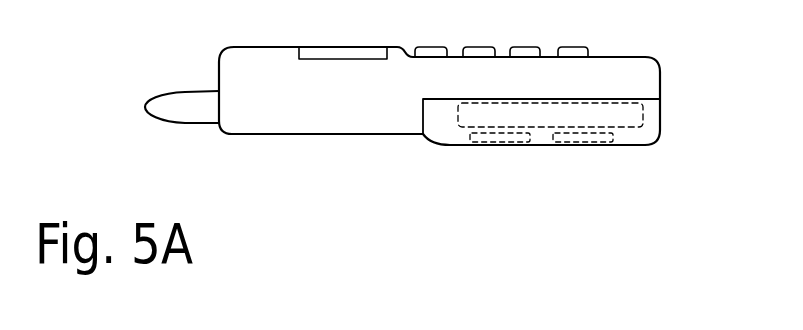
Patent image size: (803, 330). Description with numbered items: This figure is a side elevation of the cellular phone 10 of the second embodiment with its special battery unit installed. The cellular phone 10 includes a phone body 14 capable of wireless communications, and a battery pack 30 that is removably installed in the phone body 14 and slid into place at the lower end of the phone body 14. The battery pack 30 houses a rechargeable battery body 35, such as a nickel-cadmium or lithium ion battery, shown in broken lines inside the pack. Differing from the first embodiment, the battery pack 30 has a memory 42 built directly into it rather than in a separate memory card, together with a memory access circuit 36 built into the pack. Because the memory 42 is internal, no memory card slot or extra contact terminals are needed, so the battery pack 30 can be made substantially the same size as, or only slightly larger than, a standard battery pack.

The cellular phone 10 is at (46, 120).
The phone body 14 is at (318, 130).
The battery pack 30 is at (440, 123).
The rechargeable battery body 35 is at (642, 128).
The memory 42 is at (502, 148).
The memory access circuit 36 is at (577, 148).